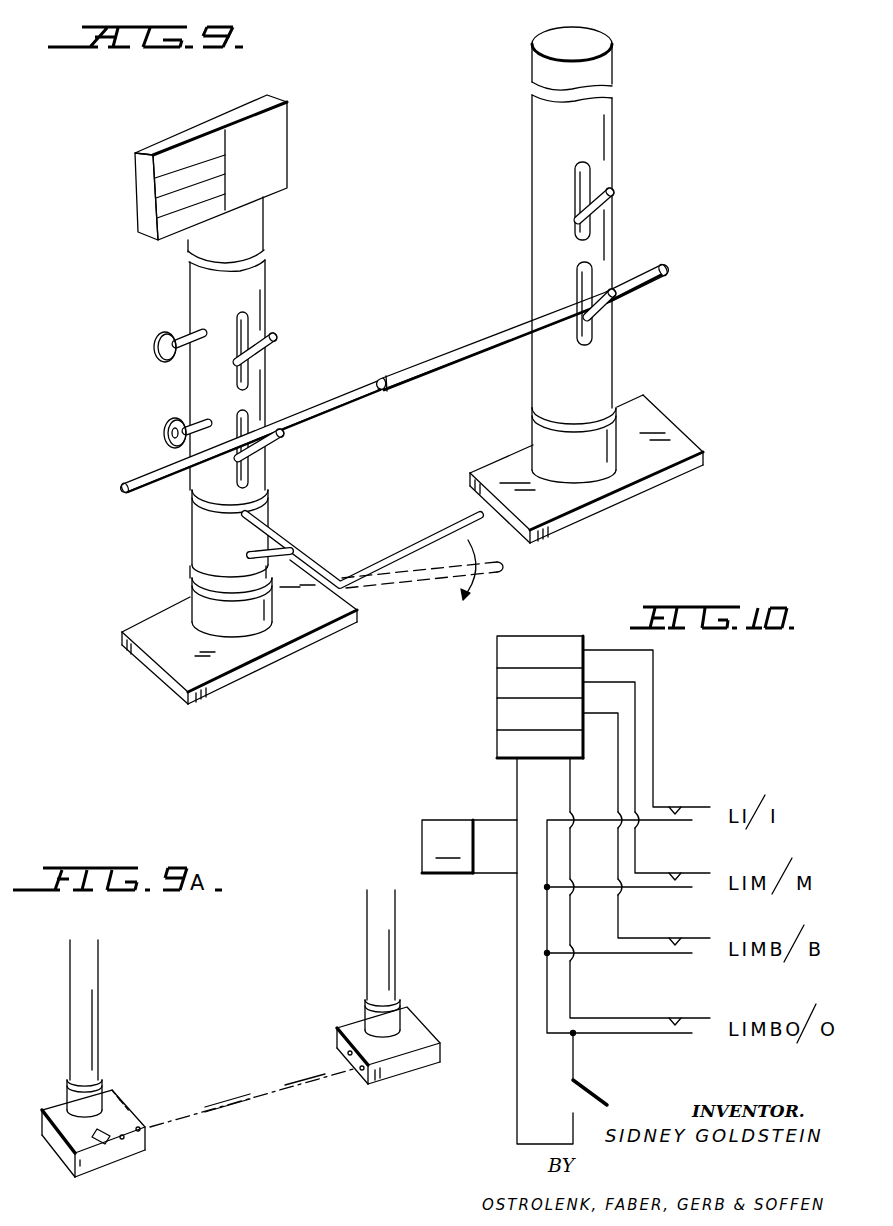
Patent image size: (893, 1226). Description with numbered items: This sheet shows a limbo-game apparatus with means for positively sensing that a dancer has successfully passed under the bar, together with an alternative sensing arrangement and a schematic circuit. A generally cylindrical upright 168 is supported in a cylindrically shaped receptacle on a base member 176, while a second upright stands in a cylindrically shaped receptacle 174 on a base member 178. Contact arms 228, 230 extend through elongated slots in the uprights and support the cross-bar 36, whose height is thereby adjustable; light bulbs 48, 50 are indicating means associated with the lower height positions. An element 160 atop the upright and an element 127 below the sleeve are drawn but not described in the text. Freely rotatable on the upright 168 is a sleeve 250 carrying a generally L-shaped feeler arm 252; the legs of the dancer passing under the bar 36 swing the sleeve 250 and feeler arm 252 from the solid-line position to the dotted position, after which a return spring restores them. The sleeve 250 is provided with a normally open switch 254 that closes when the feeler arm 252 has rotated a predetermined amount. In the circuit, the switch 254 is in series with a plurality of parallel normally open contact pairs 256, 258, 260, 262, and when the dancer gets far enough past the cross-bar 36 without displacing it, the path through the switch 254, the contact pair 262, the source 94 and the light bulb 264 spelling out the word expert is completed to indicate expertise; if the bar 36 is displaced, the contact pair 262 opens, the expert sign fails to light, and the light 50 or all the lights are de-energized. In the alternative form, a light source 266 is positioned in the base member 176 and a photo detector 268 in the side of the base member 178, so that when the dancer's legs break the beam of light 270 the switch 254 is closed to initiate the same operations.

In FIG. 9, the indicator sign 160 is at (270, 225).
In FIG. 9, the light bulb 48 is at (152, 352).
In FIG. 9, the light bulb 50 is at (162, 439).
In FIG. 9, the contact arm 228 is at (277, 348).
In FIG. 9, the contact arm 230 is at (283, 441).
In FIG. 9, the cross-bar 36 is at (346, 388).
In FIG. 9, the sleeve 250 is at (190, 527).
In FIG. 9, the collar 127 is at (191, 592).
In FIG. 9, the base member 176 is at (156, 671).
In FIG. 9A, the base member 176 is at (87, 1143).
In FIG. 9, the feeler arm 252 is at (413, 549).
In FIG. 9, the cylindrically shaped receptacle 174 is at (535, 431).
In FIG. 9, the base member 178 is at (656, 421).
In FIG. 9A, the base member 178 is at (399, 1066).
In FIG. 10, the light bulb 264 is at (495, 700).
In FIG. 10, the source 94 is at (469, 846).
In FIG. 10, the normally open contact pair 256 is at (698, 798).
In FIG. 10, the normally open contact pair 258 is at (698, 864).
In FIG. 10, the normally open contact pair 260 is at (698, 929).
In FIG. 10, the normally open contact pair 262 is at (698, 1009).
In FIG. 10, the normally open switch 254 is at (589, 1099).
In FIG. 9A, the upright 168 is at (101, 1003).
In FIG. 9A, the light source 266 is at (120, 1142).
In FIG. 9A, the photo detector 268 is at (359, 1072).
In FIG. 9A, the beam of light 270 is at (256, 1097).